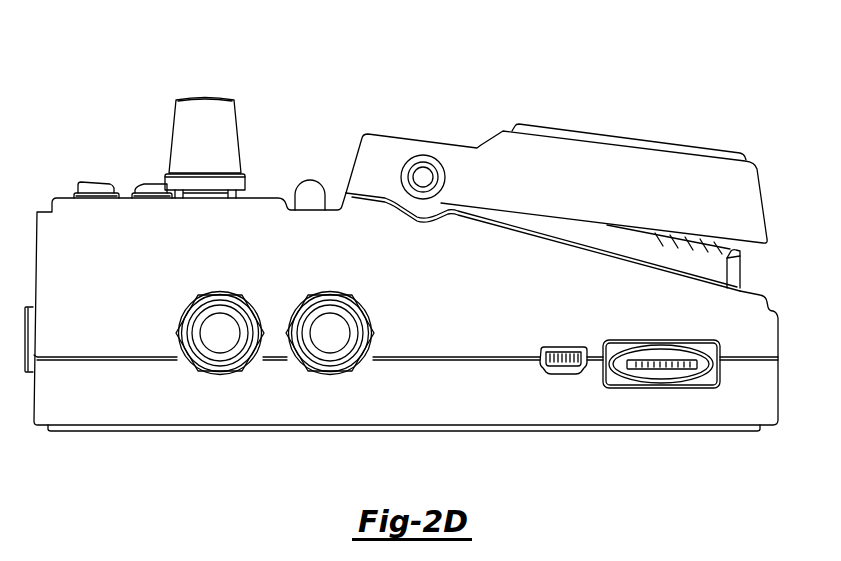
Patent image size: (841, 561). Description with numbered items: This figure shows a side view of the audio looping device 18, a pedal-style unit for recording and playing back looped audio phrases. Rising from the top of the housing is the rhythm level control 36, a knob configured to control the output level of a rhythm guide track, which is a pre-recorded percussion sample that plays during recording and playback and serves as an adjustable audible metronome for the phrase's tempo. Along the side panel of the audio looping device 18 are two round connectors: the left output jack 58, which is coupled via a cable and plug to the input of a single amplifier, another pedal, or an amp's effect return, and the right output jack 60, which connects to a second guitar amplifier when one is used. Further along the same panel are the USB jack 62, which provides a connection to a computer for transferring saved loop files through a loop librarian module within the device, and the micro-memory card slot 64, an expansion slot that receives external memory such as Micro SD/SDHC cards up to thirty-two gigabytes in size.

The audio looping device 18 is at (729, 81).
The rhythm level control 36 is at (203, 97).
The left output jack 58 is at (219, 291).
The right output jack 60 is at (329, 291).
The USB jack 62 is at (565, 346).
The micro-memory card slot 64 is at (656, 341).